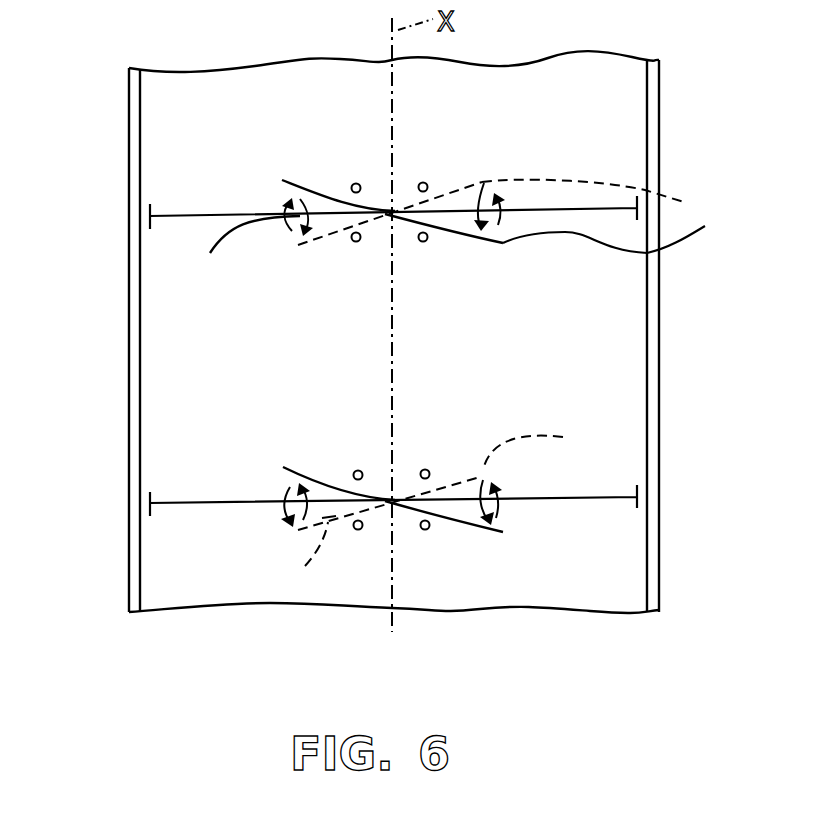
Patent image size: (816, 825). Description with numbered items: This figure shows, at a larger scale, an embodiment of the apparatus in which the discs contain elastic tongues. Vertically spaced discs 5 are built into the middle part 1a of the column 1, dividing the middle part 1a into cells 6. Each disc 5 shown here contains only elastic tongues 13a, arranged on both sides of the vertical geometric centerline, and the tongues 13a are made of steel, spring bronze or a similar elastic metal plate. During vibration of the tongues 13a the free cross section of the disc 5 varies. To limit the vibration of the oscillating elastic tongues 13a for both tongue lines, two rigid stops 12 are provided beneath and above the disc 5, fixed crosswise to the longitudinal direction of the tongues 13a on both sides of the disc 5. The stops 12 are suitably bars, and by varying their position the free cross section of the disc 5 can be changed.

The column 1 is at (129, 148).
The middle part 1a is at (128, 336).
The disc 5 is at (188, 216).
The cell 6 is at (577, 148).
The rigid stop 12 is at (352, 208).
The elastic tongue 13a is at (298, 245).